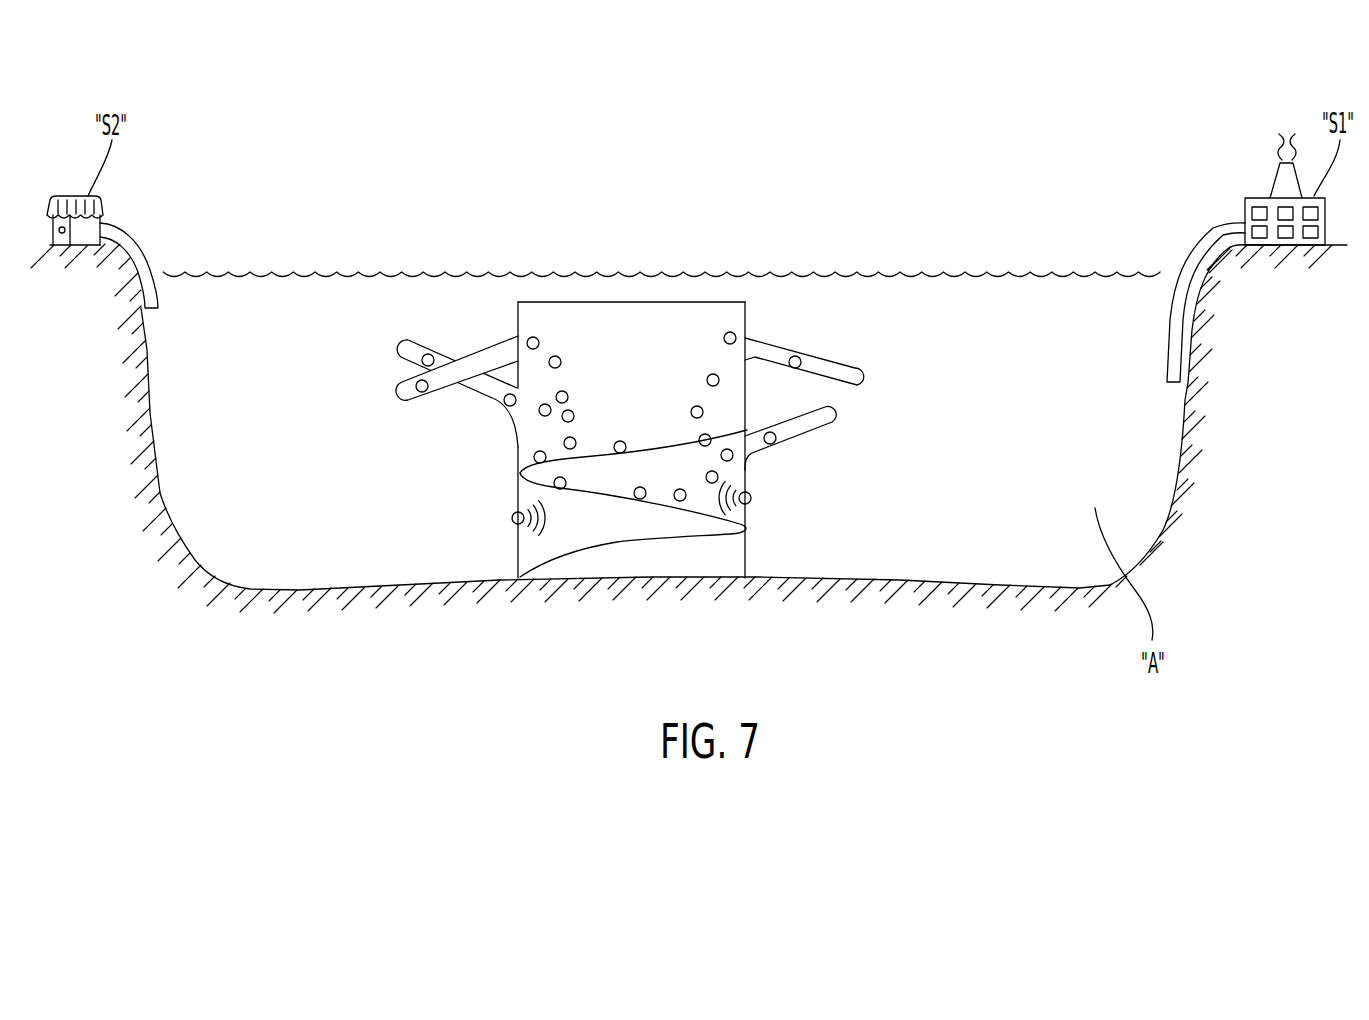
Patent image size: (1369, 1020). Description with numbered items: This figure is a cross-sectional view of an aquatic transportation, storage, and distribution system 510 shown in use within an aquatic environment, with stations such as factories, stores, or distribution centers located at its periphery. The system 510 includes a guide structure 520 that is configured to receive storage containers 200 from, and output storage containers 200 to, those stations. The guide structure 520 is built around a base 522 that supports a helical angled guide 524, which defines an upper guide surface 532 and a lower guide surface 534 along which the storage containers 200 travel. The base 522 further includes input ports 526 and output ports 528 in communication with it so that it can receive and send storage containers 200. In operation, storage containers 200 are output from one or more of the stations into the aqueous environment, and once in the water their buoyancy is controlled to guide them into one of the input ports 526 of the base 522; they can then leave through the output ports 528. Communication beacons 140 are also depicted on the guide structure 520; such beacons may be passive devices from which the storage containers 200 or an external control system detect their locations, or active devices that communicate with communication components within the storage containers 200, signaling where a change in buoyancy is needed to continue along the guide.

The aquatic transportation, storage, and distribution system 510 is at (636, 201).
The guide structure 520 is at (516, 449).
The base 522 is at (750, 553).
The helical angled guide 524 is at (612, 541).
The input ports 526 is at (400, 392).
The output ports 528 is at (406, 344).
The upper guide surface 532 is at (660, 438).
The lower guide surface 534 is at (663, 512).
The communication beacons 140 is at (512, 519).
The storage containers 200 is at (553, 356).